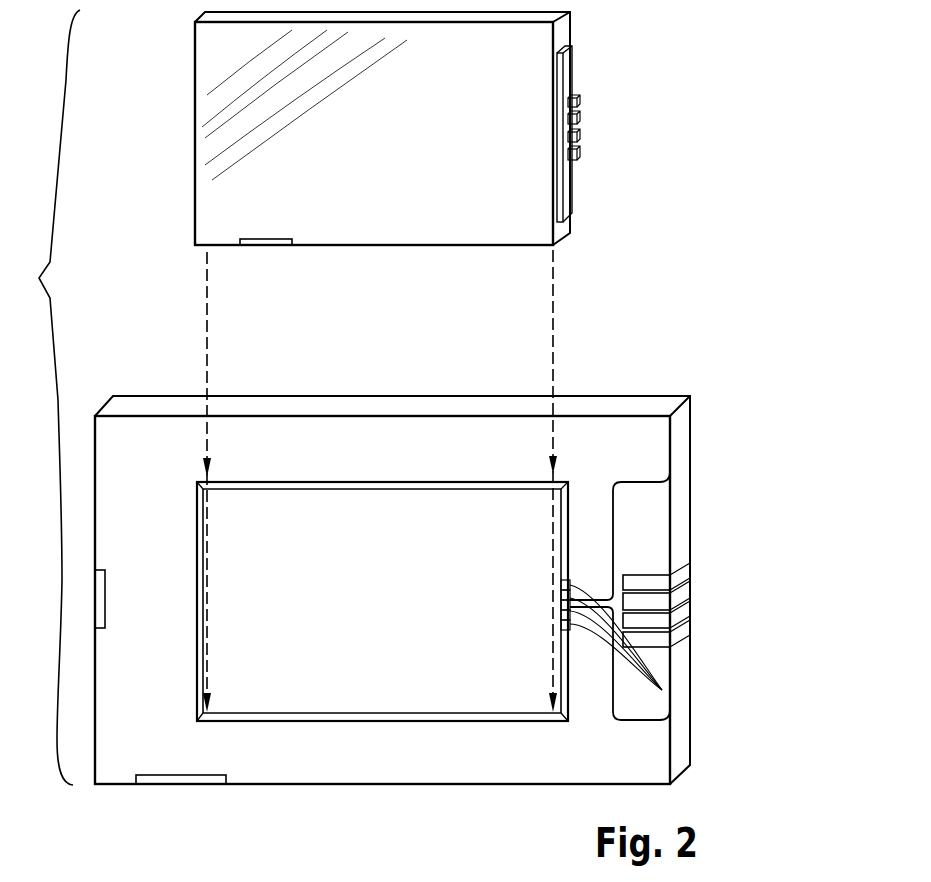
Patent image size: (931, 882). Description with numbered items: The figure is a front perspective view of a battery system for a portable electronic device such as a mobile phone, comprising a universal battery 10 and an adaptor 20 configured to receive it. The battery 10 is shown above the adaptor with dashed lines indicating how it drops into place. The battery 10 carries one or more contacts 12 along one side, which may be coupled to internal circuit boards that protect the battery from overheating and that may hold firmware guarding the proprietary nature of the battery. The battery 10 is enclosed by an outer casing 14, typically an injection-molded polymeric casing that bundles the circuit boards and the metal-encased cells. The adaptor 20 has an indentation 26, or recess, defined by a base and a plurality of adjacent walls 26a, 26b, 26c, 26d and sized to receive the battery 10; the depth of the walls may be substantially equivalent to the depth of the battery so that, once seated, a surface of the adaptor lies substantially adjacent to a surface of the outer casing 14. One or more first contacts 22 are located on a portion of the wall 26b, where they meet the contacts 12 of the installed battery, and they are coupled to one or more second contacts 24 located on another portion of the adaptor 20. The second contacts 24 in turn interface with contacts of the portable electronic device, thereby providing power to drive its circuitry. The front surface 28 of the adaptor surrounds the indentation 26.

The battery 10 is at (577, 235).
The contacts 12 is at (581, 154).
The outer casing 14 is at (419, 165).
The adaptor 20 is at (680, 782).
The first contacts 22 is at (662, 690).
The second contacts 24 is at (683, 580).
The indentation 26 is at (349, 604).
The wall 26a is at (468, 488).
The wall 26b is at (561, 650).
The wall 26c is at (374, 716).
The wall 26d is at (200, 612).
The front surface of housing 28 is at (356, 462).